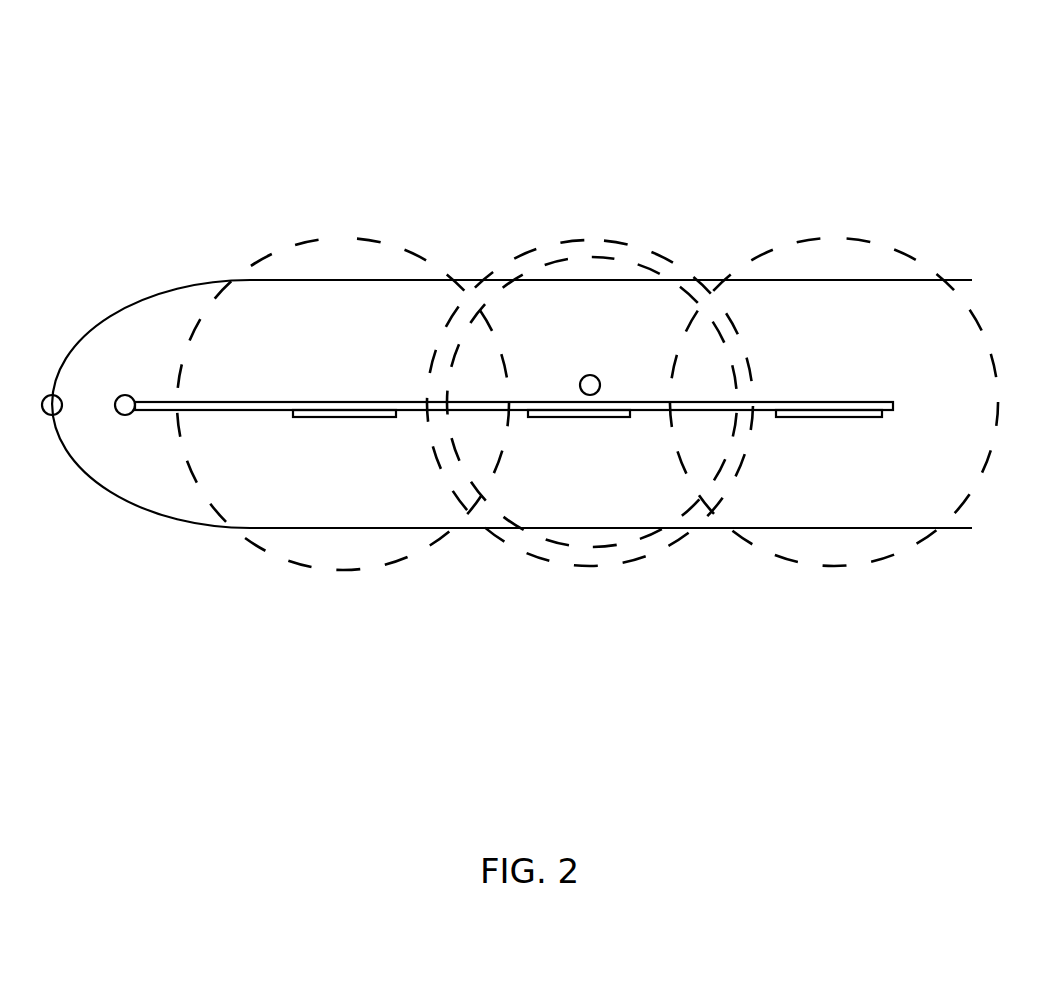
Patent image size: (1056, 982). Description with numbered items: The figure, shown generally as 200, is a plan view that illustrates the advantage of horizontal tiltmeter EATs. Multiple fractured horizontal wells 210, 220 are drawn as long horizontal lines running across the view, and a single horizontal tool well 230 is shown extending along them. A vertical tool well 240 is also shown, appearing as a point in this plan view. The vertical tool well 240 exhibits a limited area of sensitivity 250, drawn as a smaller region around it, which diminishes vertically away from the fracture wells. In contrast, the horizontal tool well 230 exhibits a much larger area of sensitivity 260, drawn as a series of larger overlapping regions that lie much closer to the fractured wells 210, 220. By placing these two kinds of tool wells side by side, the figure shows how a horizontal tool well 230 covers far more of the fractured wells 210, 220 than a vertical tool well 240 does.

The plan view of fractured wells 200 is at (256, 86).
The fractured horizontal well 210 is at (257, 278).
The fractured horizontal well 220 is at (313, 532).
The horizontal tool well 230 is at (248, 410).
The vertical tool well 240 is at (601, 388).
The limited area of sensitivity 250 is at (568, 556).
The larger area of sensitivity 260 is at (377, 243).